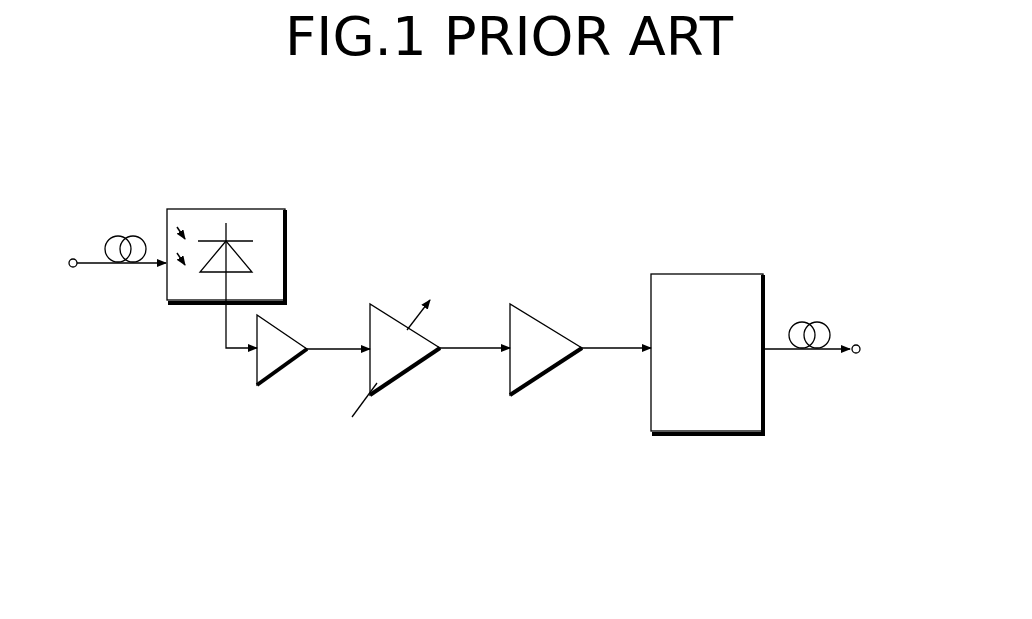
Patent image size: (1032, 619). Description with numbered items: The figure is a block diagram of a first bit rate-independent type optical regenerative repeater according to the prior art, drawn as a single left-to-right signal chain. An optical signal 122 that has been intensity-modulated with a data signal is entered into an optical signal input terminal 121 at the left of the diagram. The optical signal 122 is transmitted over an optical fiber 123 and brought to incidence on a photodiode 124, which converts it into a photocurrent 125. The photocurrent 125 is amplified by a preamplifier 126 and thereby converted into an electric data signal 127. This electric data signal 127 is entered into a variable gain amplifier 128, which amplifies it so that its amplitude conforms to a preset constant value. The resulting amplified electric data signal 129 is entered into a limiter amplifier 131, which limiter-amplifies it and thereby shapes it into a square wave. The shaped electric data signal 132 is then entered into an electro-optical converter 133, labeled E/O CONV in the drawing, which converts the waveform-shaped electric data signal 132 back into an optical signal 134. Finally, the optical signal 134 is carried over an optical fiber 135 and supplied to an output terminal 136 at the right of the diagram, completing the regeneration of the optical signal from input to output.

The optical signal input terminal 121 is at (73, 258).
The optical signal 122 is at (98, 267).
The optical fiber 123 is at (133, 235).
The photodiode 124 is at (288, 232).
The photocurrent 125 is at (225, 338).
The preamplifier 126 is at (289, 330).
The electric data signal 127 is at (326, 352).
The variable gain amplifier 128 is at (378, 300).
The amplified electric data signal 129 is at (462, 345).
The limiter amplifier 131 is at (530, 308).
The shaped electric data signal 132 is at (598, 345).
The electro-optical converter 133 is at (684, 272).
The optical signal 134 is at (784, 353).
The optical fiber 135 is at (808, 320).
The output terminal 136 is at (859, 357).